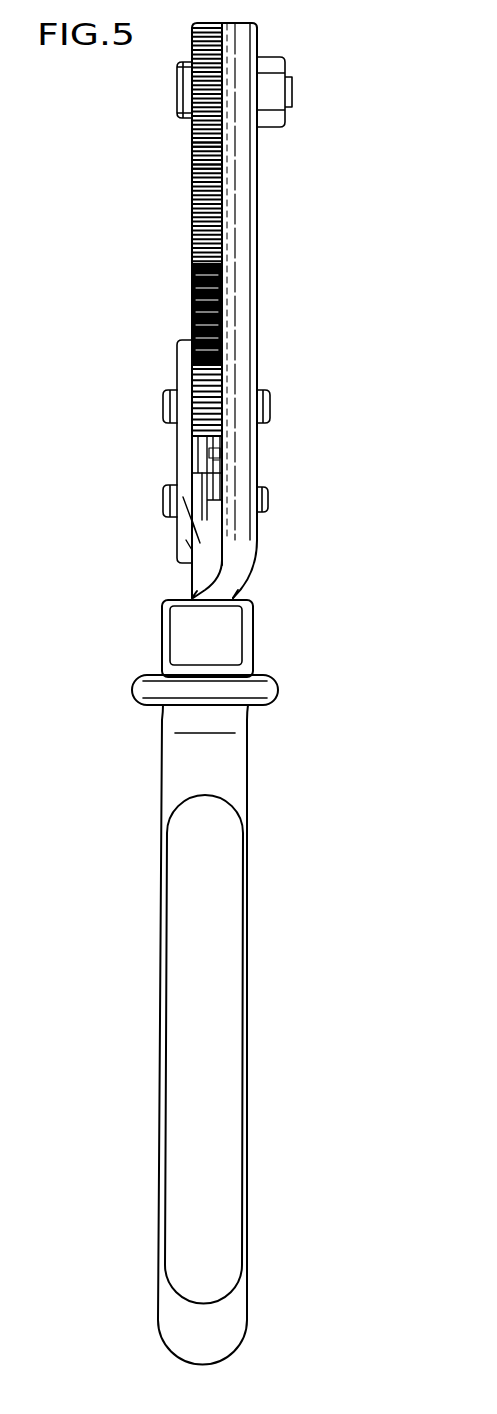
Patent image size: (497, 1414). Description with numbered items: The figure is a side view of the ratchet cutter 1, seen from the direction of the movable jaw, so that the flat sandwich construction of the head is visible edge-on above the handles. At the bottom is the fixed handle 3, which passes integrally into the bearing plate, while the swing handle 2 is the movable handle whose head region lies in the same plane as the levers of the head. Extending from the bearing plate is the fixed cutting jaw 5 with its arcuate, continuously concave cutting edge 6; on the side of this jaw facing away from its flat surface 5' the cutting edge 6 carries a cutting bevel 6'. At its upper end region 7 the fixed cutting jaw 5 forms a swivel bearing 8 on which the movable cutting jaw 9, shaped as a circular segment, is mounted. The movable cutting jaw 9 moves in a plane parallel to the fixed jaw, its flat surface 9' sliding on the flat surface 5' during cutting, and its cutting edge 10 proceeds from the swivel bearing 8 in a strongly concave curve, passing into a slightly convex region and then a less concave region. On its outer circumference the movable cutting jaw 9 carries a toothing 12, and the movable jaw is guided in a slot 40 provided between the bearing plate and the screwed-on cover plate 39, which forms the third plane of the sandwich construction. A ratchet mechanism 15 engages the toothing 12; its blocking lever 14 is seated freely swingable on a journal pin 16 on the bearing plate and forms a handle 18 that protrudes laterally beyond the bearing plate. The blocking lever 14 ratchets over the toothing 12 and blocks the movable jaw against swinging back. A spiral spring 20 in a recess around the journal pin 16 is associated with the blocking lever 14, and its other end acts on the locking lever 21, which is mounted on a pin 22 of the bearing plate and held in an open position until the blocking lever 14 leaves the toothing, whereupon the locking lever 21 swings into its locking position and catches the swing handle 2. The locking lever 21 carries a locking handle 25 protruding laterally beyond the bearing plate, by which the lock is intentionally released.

The ratchet cutter 1 is at (305, 593).
The swing handle 2 is at (200, 573).
The fixed handle 3 is at (220, 902).
The fixed cutting jaw 5 is at (293, 313).
The flat surface 5' is at (293, 282).
The cutting edge 6 is at (290, 282).
The cutting bevel 6' is at (298, 282).
The upper end region 7 is at (242, 43).
The swivel bearing 8 is at (178, 93).
The movable cutting jaw 9 is at (156, 144).
The flat surface 9' is at (156, 349).
The cutting edge 10 is at (228, 222).
The toothing 12 is at (200, 145).
The blocking lever 14 is at (186, 412).
The ratchet mechanism 15 is at (232, 465).
The journal pin 16 is at (263, 392).
The handle 18 is at (160, 396).
The spiral spring 20 is at (210, 452).
The locking lever 21 is at (183, 543).
The pin 22 is at (268, 510).
The locking handle 25 is at (173, 492).
The cover plate 39 is at (187, 445).
The slot 40 is at (180, 342).